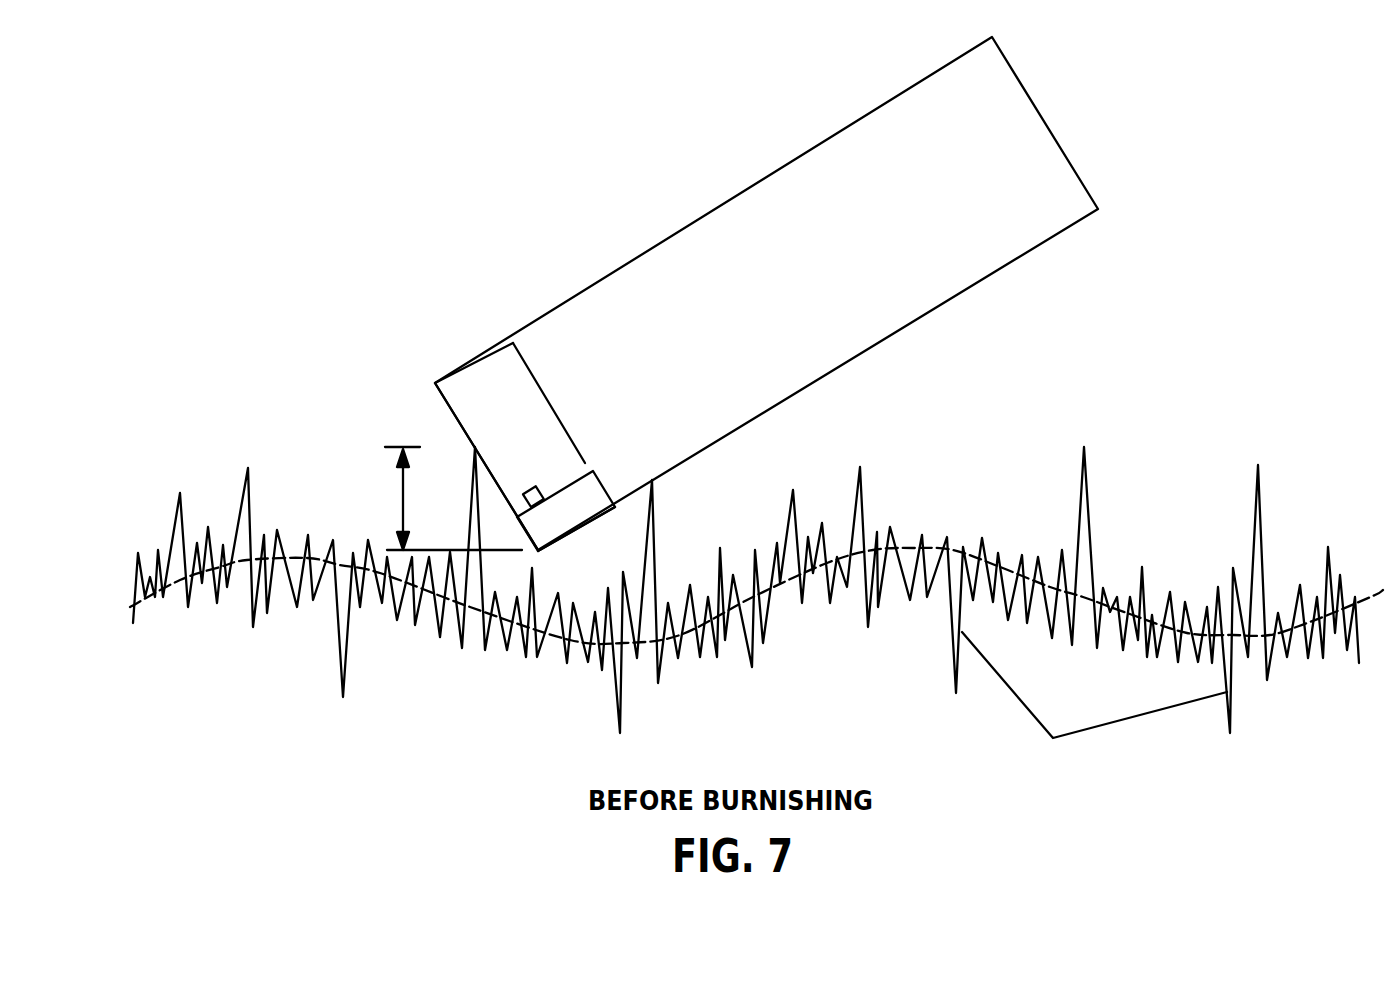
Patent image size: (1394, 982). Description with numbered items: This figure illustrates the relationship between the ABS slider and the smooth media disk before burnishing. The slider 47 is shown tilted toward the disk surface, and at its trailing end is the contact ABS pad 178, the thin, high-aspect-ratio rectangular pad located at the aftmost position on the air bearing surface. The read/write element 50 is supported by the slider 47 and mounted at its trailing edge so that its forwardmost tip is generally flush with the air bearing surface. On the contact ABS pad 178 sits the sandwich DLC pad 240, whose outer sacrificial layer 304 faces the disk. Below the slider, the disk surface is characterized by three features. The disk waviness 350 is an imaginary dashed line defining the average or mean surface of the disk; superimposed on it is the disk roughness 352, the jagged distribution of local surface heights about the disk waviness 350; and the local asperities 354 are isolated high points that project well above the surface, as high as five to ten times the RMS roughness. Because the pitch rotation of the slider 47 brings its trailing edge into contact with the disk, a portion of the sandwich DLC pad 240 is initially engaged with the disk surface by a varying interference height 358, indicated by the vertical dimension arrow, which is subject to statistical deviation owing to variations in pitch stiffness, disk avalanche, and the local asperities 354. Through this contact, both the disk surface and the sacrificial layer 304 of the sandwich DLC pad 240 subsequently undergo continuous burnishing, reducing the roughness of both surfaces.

The slider 47 is at (775, 187).
The contact ABS pad 178 is at (490, 382).
The read/write element 50 is at (538, 485).
The sandwich DLC pad 240 is at (598, 503).
The sacrificial layer 304 is at (545, 522).
The interference height 358 is at (433, 498).
The disk waviness 350 is at (1373, 592).
The disk roughness 352 is at (895, 609).
The local asperities 354 is at (1094, 706).